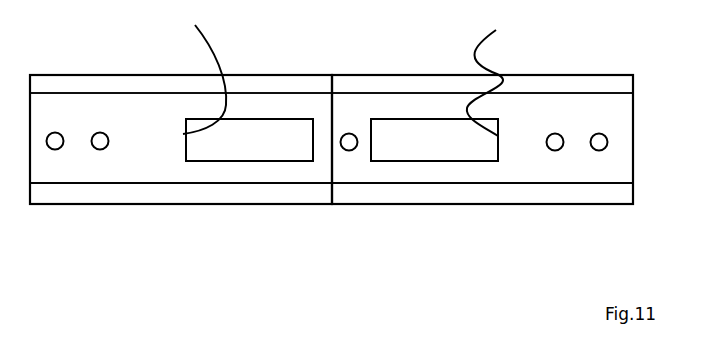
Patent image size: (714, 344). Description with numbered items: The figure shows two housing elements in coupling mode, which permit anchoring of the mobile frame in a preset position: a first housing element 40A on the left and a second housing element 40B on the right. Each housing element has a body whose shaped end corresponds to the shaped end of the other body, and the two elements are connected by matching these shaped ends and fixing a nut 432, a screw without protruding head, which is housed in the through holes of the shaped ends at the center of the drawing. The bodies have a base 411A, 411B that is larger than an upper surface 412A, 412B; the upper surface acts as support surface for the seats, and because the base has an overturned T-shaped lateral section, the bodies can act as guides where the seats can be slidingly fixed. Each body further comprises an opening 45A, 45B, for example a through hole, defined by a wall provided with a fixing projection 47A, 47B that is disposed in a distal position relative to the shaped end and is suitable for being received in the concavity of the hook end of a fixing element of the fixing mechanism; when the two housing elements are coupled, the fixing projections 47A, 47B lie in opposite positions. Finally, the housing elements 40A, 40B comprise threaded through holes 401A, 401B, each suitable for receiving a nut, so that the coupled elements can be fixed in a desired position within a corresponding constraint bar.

The first housing element 40A is at (142, 62).
The second housing element 40B is at (549, 68).
The threaded through holes 401A is at (100, 136).
The threaded through holes 401B is at (598, 137).
The base 411A is at (55, 195).
The base 411B is at (404, 190).
The upper surface 412A is at (148, 175).
The upper surface 412B is at (512, 163).
The nut 432 is at (347, 147).
The opening 45A is at (253, 134).
The opening 45B is at (442, 135).
The fixing projection 47A is at (201, 68).
The fixing projection 47B is at (487, 72).